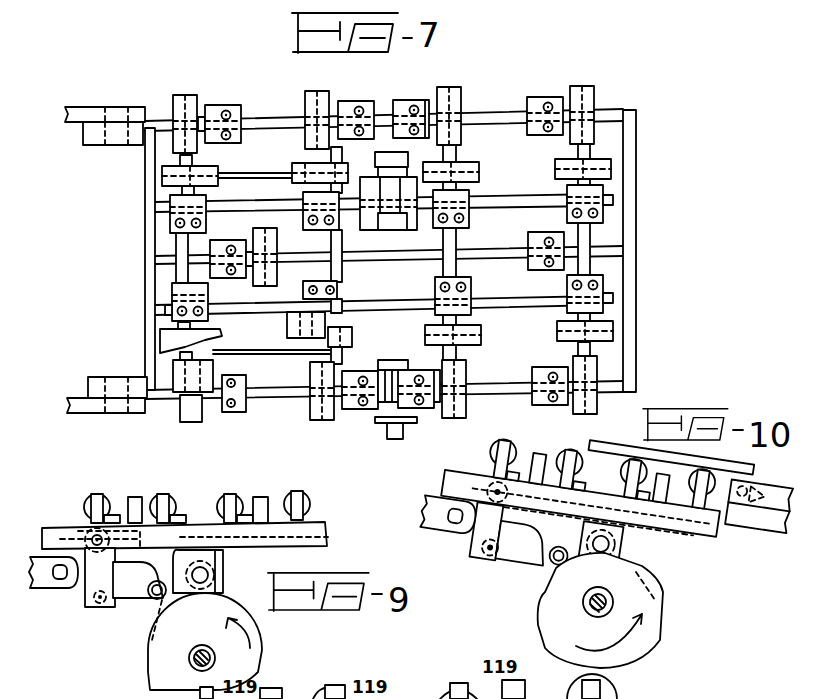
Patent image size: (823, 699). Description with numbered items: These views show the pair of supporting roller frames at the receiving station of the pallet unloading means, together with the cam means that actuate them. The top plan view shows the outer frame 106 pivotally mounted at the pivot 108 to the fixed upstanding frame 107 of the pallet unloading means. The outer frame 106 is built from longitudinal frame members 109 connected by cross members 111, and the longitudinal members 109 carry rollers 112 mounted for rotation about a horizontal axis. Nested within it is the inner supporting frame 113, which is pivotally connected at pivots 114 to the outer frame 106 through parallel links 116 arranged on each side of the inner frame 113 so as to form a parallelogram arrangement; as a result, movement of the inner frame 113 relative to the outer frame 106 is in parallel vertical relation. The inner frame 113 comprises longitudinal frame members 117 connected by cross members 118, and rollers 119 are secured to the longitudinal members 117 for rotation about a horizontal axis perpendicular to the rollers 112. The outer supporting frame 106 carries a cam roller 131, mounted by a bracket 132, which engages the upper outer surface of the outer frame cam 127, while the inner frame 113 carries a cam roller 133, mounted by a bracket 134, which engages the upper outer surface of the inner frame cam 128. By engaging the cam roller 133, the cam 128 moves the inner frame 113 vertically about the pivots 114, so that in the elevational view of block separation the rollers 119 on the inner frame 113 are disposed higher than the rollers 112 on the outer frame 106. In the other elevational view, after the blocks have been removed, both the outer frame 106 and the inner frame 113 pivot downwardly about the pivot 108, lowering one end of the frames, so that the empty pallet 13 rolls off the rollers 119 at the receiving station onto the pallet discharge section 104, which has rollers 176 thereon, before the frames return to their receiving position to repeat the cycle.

In FIG. 10, the pallet 13 is at (600, 442).
In FIG. 10, the pallet discharge section 104 is at (742, 512).
In FIG. 7, the outer frame 106 is at (270, 126).
In FIG. 7, the fixed upstanding frame 107 is at (80, 112).
In FIG. 7, the pivot 108 is at (95, 135).
In FIG. 9, the pivot 108 is at (60, 588).
In FIG. 10, the pivot 108 is at (448, 525).
In FIG. 7, the longitudinal frame members 109 is at (475, 118).
In FIG. 7, the cross members 111 is at (630, 218).
In FIG. 7, the rollers 112 is at (190, 110).
In FIG. 9, the rollers 112 is at (275, 692).
In FIG. 7, the inner supporting frame 113 is at (218, 308).
In FIG. 7, the pivots 114 is at (205, 151).
In FIG. 10, the pivots 114 is at (490, 490).
In FIG. 7, the parallel links 116 is at (228, 178).
In FIG. 9, the parallel links 116 is at (90, 535).
In FIG. 10, the parallel links 116 is at (520, 500).
In FIG. 7, the longitudinal frame members 117 is at (490, 203).
In FIG. 7, the cross members 118 is at (182, 242).
In FIG. 7, the rollers 119 is at (210, 187).
In FIG. 9, the rollers 119 is at (178, 512).
In FIG. 10, the rollers 119 is at (503, 450).
In FIG. 9, the outer frame cam 127 is at (262, 642).
In FIG. 10, the outer frame cam 127 is at (660, 600).
In FIG. 9, the inner frame cam 128 is at (158, 677).
In FIG. 10, the inner frame cam 128 is at (545, 598).
In FIG. 7, the cam roller 131 is at (385, 405).
In FIG. 9, the cam roller 131 is at (215, 590).
In FIG. 7, the bracket 132 is at (410, 425).
In FIG. 7, the cam roller 133 is at (402, 201).
In FIG. 7, the bracket 134 is at (352, 166).
In FIG. 10, the rollers 176 is at (748, 493).